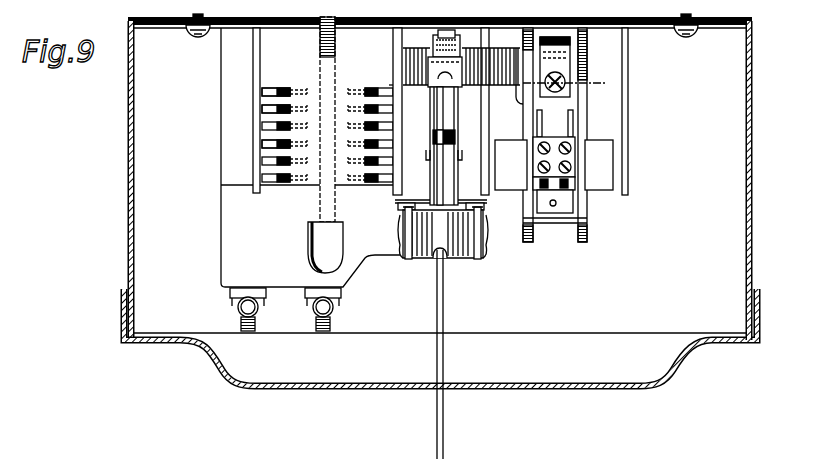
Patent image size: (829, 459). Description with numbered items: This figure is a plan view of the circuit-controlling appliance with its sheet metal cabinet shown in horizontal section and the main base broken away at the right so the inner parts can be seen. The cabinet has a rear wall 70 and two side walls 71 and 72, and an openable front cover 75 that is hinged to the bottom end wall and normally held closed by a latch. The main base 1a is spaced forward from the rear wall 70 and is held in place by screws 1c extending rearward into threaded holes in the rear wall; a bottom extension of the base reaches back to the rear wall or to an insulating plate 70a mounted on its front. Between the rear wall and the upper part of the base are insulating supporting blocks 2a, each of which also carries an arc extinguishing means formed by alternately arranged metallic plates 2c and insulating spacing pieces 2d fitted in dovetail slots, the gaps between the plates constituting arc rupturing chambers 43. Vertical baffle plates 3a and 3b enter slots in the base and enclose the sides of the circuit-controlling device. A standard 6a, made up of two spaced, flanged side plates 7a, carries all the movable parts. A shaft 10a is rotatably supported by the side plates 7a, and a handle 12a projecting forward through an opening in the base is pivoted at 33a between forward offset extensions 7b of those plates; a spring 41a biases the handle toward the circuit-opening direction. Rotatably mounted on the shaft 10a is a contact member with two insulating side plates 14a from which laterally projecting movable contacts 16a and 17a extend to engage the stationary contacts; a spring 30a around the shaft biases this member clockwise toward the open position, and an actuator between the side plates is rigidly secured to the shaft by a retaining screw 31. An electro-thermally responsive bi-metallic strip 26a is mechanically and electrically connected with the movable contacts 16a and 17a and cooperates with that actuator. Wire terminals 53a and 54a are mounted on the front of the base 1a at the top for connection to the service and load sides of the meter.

The rear wall 70 is at (168, 27).
The insulating plate 70a is at (682, 32).
The side wall 71 is at (753, 166).
The side wall 72 is at (128, 177).
The openable front cover 75 is at (304, 388).
The main base 1a is at (221, 237).
The screw 1c is at (349, 58).
The supporting block 2a is at (327, 110).
The metallic plate 2c is at (262, 102).
The insulating spacing piece 2d is at (262, 146).
The arc rupturing chamber 43 is at (266, 113).
The baffle plate 3a is at (394, 86).
The baffle plate 3b is at (253, 52).
The standard 6a is at (428, 152).
The side plate 7a is at (430, 125).
The forward offset extension 7b is at (405, 258).
The spring 30a is at (512, 65).
The handle pivot 33a is at (484, 240).
The spring 41a is at (430, 258).
The handle 12a is at (444, 426).
The side plate 14a is at (527, 119).
The shaft 10a is at (587, 68).
The electromagnet 31 is at (564, 81).
The movable contact 16a is at (511, 165).
The movable contact 17a is at (602, 165).
The bi-metallic strip 26a is at (573, 203).
The wire terminal 53a is at (259, 310).
The wire terminal 54a is at (334, 310).